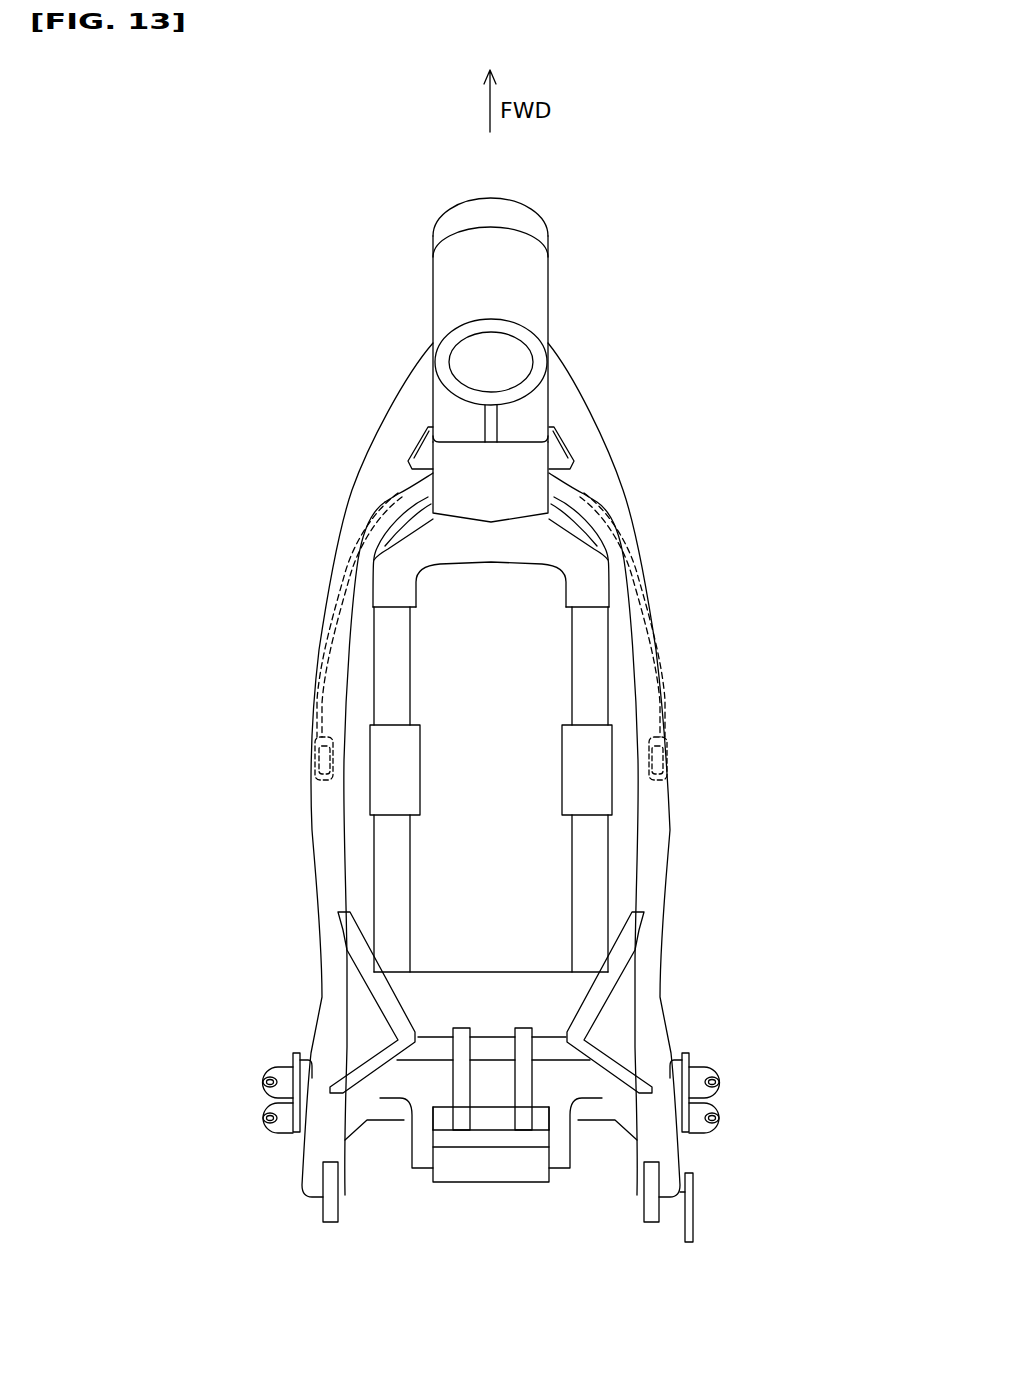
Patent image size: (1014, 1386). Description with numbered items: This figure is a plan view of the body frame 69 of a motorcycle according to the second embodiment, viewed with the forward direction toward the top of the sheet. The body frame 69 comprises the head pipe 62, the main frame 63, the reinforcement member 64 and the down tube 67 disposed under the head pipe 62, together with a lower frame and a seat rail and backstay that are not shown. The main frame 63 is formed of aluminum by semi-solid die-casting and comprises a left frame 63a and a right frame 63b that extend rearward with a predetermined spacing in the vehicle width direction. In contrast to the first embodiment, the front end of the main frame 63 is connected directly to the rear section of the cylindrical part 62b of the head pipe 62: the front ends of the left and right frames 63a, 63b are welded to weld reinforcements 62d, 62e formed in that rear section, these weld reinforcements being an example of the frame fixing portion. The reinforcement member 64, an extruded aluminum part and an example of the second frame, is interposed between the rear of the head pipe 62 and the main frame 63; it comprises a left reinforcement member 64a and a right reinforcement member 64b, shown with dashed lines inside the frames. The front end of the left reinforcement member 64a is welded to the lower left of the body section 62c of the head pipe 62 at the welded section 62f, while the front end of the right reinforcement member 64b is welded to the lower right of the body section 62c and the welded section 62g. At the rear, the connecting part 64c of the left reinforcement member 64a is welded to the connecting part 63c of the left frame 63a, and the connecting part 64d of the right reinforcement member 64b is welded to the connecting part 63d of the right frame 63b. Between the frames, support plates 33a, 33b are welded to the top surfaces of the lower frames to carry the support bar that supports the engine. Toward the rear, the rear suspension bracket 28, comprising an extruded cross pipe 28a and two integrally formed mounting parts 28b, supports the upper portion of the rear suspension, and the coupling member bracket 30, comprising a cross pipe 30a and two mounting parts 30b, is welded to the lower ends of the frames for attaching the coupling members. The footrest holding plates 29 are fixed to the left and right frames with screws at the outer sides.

The head pipe 62 is at (455, 302).
The cylindrical part 62b is at (540, 290).
The body section 62c is at (513, 500).
The weld reinforcement 62d is at (410, 455).
The weld reinforcement 62e is at (565, 448).
The welded section 62f is at (400, 498).
The welded section 62g is at (583, 502).
The down tube 67 is at (587, 567).
The body frame 69 is at (757, 515).
The main frame 63 is at (497, 792).
The left frame 63a is at (326, 798).
The right frame 63b is at (658, 803).
The connecting part 63c is at (318, 762).
The connecting part 63d is at (667, 770).
The reinforcement member 64 is at (509, 615).
The left reinforcement member 64a is at (343, 572).
The right reinforcement member 64b is at (650, 580).
The connecting part 64c is at (316, 742).
The connecting part 64d is at (672, 747).
The support plate 33a is at (390, 733).
The support plate 33b is at (598, 735).
The rear suspension bracket 28 is at (500, 995).
The cross pipe 28a is at (447, 995).
The mounting part 28b is at (455, 1074).
The footrest holding plate 29 is at (262, 1067).
The coupling member bracket 30 is at (578, 1083).
The cross pipe 30a is at (497, 1092).
The mounting part 30b is at (461, 1123).